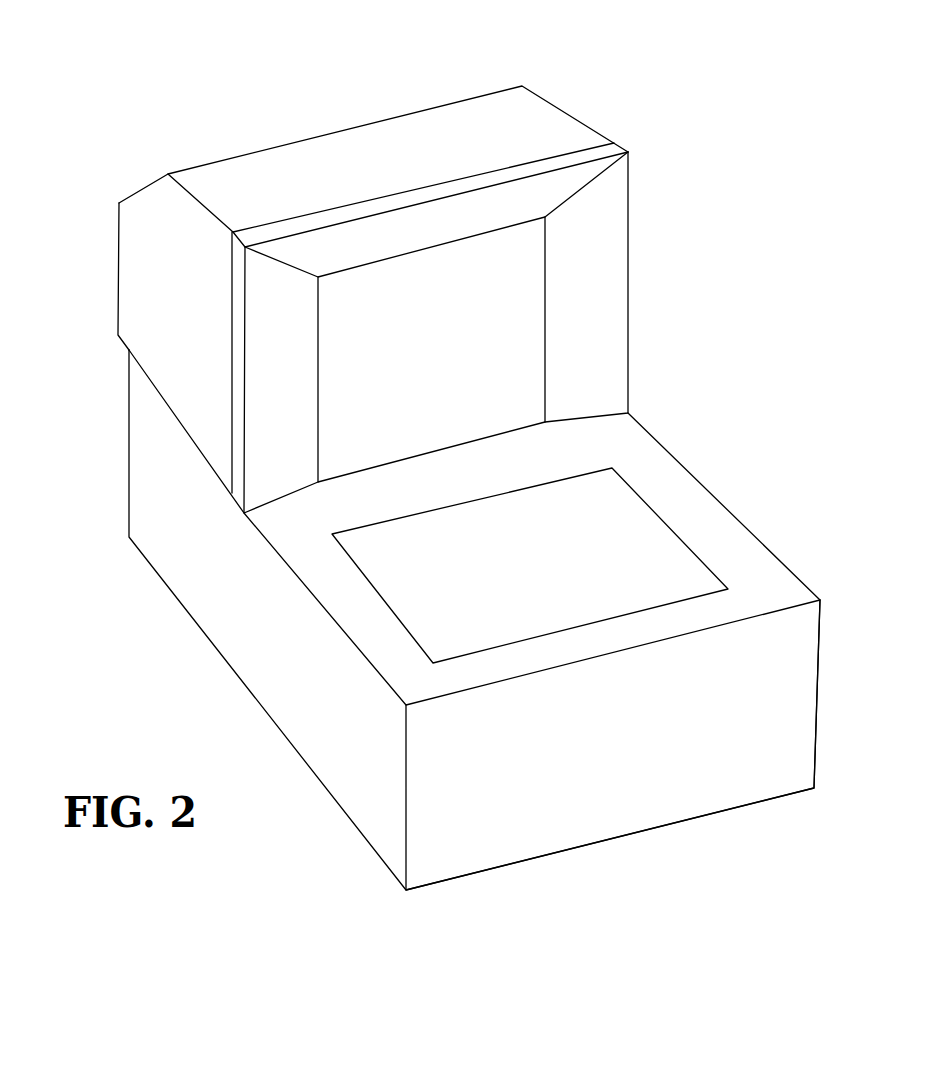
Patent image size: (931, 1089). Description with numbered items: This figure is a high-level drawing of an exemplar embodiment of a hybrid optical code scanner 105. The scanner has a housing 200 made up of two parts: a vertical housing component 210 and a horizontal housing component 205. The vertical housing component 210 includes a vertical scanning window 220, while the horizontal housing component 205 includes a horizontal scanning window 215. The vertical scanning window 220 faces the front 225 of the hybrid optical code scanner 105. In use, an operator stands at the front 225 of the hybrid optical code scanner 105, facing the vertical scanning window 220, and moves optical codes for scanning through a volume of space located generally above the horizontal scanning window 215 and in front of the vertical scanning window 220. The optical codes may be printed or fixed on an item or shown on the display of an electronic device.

The hybrid optical code scanner 105 is at (146, 42).
The housing 200 is at (148, 480).
The horizontal housing component 205 is at (680, 497).
The vertical housing component 210 is at (538, 120).
The horizontal scanning window 215 is at (688, 565).
The vertical scanning window 220 is at (492, 298).
The front 225 is at (606, 716).